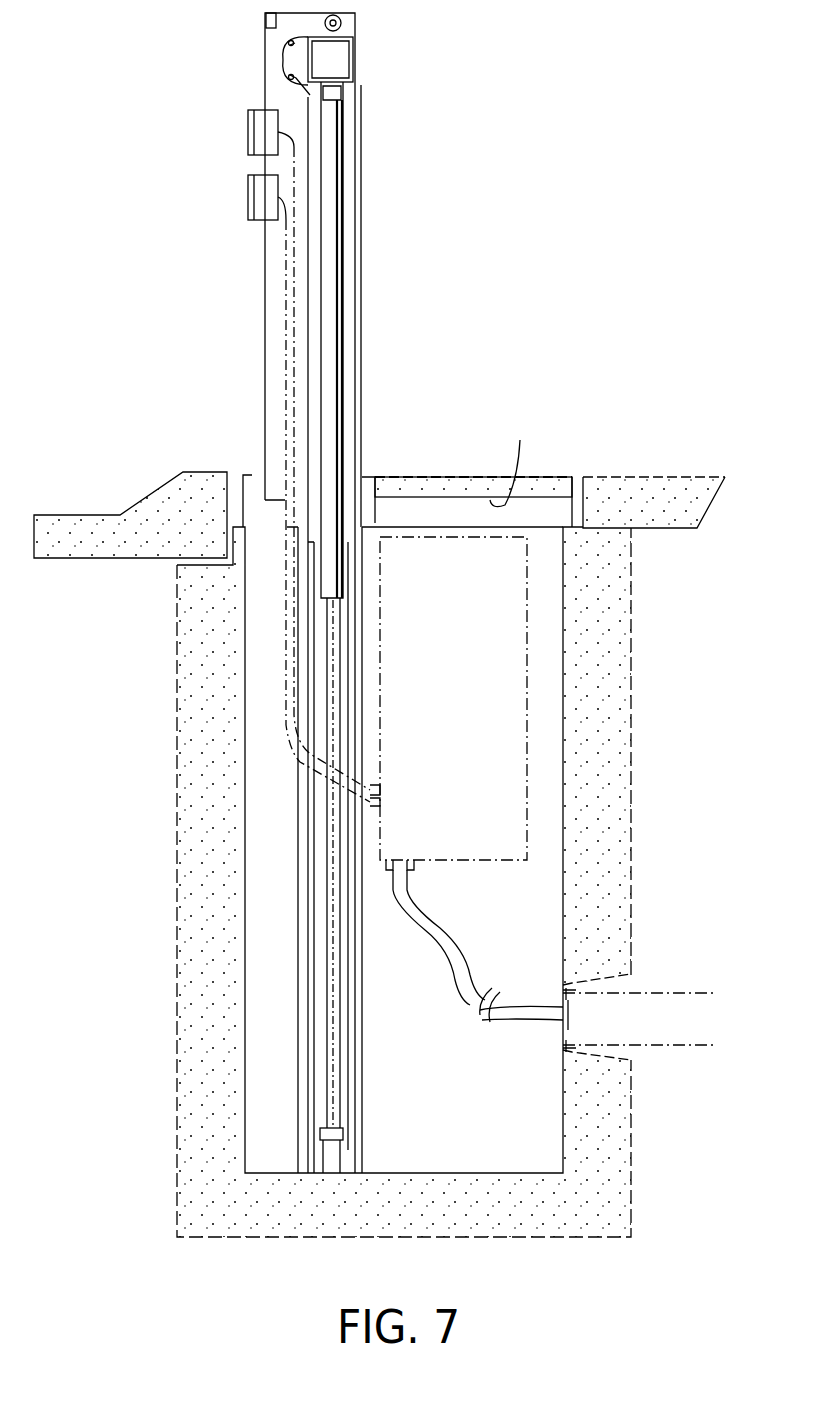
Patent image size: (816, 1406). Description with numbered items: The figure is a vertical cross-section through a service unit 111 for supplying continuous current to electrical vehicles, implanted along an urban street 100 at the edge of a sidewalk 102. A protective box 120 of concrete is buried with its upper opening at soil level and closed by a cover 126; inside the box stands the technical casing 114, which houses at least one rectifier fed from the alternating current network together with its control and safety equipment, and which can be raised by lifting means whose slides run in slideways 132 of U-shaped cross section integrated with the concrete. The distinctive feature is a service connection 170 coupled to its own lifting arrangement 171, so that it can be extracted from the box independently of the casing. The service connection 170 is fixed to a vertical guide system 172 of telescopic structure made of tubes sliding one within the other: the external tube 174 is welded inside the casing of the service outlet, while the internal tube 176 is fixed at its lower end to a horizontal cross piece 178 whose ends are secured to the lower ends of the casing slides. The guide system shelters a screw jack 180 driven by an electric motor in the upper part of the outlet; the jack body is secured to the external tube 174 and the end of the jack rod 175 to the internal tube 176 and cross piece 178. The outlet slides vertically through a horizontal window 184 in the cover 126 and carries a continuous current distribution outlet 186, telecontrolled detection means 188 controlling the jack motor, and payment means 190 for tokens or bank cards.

The urban street 100 is at (105, 515).
The sidewalk 102 is at (643, 497).
The service unit 111 is at (238, 460).
The technical casing 114 is at (428, 843).
The protective box 120 is at (195, 855).
The cover 126 is at (512, 460).
The slideways 132 is at (363, 1102).
The service connection 170 is at (262, 334).
The lifting arrangement 171 is at (360, 335).
The vertical guide system 172 is at (348, 982).
The external tube 174 is at (308, 260).
The jack rod 175 is at (330, 1122).
The internal tube 176 is at (355, 1052).
The horizontal cross piece 178 is at (347, 1147).
The jack 180 is at (329, 373).
The horizontal window 184 is at (367, 477).
The continuous current distribution outlet 186 is at (248, 128).
The telecontrolled detection means 188 is at (264, 20).
The payment means 190 is at (248, 193).